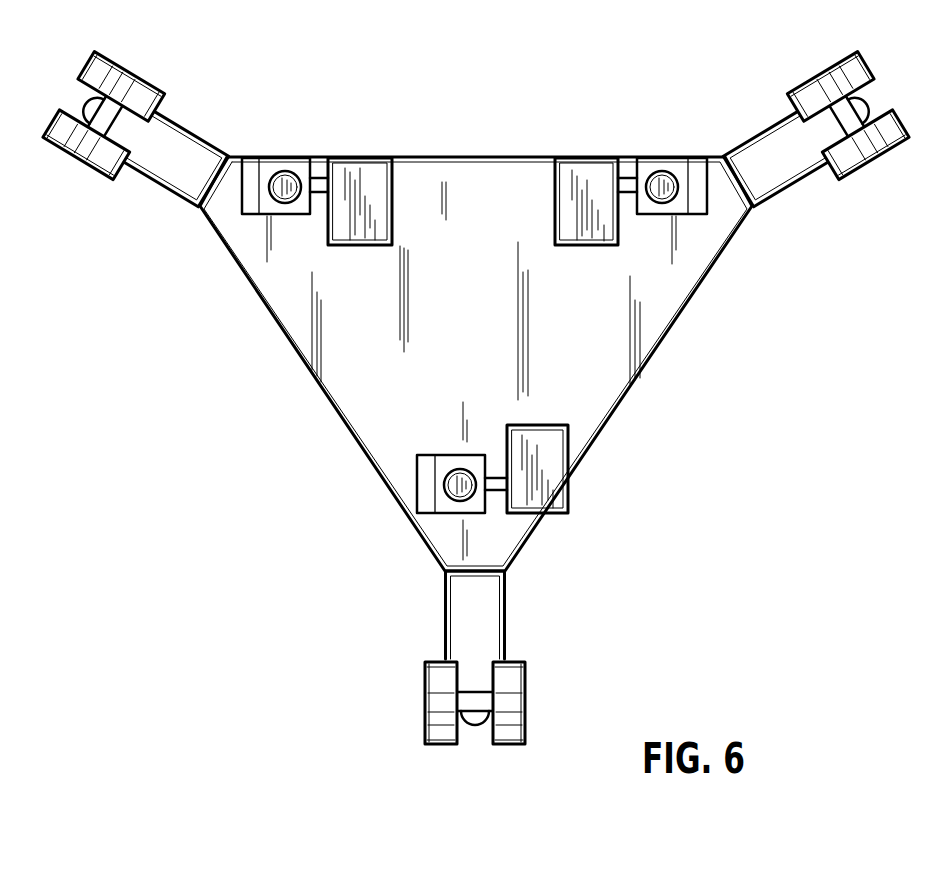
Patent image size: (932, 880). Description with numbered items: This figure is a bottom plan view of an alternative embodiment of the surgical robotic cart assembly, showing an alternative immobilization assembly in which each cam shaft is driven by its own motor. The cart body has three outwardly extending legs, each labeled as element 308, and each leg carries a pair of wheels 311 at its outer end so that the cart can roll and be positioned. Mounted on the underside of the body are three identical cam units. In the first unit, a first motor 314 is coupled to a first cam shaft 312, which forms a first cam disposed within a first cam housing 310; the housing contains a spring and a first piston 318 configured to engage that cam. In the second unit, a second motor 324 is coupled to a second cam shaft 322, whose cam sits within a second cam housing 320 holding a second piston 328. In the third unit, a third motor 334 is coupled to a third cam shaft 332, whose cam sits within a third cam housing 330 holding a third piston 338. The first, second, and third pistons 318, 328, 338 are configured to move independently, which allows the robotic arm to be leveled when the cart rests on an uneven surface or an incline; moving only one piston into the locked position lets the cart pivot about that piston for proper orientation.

The arm 308 is at (168, 177).
The wheel 311 is at (52, 137).
The first cam housing 310 is at (263, 160).
The first piston 318 is at (280, 171).
The first cam shaft 312 is at (320, 176).
The first motor 314 is at (368, 162).
The second motor 324 is at (590, 167).
The second cam shaft 322 is at (628, 174).
The second piston 328 is at (668, 171).
The second cam housing 320 is at (698, 162).
The third cam housing 330 is at (427, 468).
The third piston 338 is at (453, 493).
The third cam shaft 332 is at (493, 493).
The third motor 334 is at (557, 447).